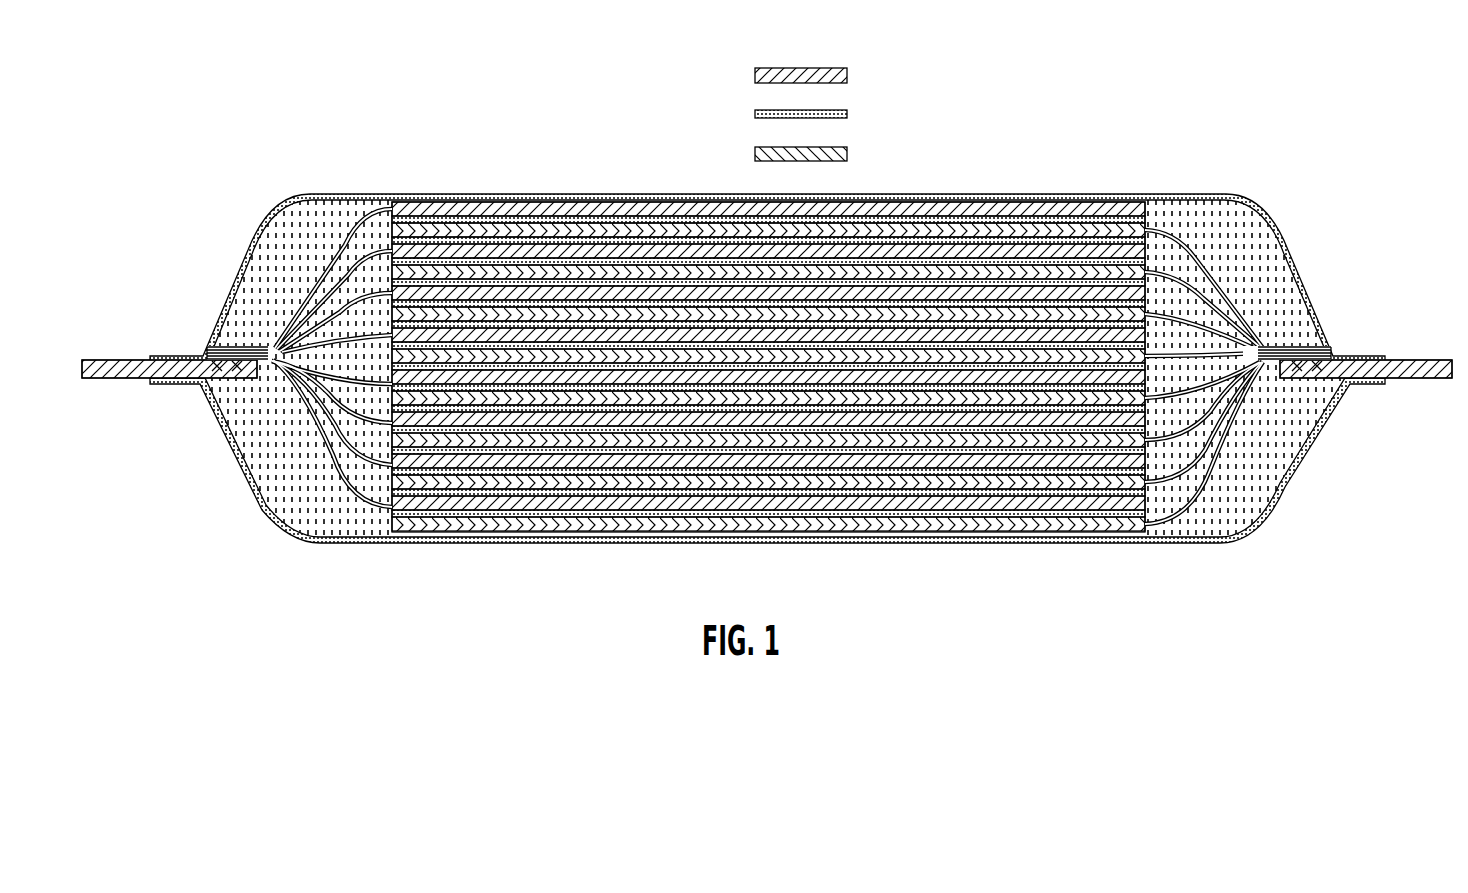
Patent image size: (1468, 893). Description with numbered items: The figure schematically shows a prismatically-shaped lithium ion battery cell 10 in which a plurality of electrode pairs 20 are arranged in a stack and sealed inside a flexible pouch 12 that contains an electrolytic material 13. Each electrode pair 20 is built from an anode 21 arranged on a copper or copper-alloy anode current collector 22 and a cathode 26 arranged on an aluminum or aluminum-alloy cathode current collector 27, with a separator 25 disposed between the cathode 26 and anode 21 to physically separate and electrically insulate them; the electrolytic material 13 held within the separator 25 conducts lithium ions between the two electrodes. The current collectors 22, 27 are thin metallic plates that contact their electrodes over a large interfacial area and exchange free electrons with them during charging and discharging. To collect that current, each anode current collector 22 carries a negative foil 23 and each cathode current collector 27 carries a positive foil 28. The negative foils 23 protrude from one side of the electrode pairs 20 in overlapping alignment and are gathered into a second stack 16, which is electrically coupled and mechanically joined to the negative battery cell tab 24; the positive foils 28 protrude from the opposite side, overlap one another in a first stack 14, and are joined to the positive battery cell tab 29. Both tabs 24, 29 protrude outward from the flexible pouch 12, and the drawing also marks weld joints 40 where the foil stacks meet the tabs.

The lithium ion battery cell 10 is at (266, 174).
The flexible pouch 12 is at (229, 275).
The electrolytic material 13 is at (768, 300).
The first stack 14 is at (1308, 345).
The second stack 16 is at (214, 344).
The electrode pair 20 is at (1068, 316).
The anode 21 is at (768, 277).
The anode current collector 22 is at (755, 75).
The negative foil 23 is at (388, 203).
The negative battery cell tab 24 is at (138, 359).
The separator 25 is at (755, 113).
The cathode 26 is at (768, 326).
The cathode current collector 27 is at (755, 153).
The positive foil 28 is at (1233, 403).
The positive battery cell tab 29 is at (1427, 359).
The weld joints 40 is at (205, 392).